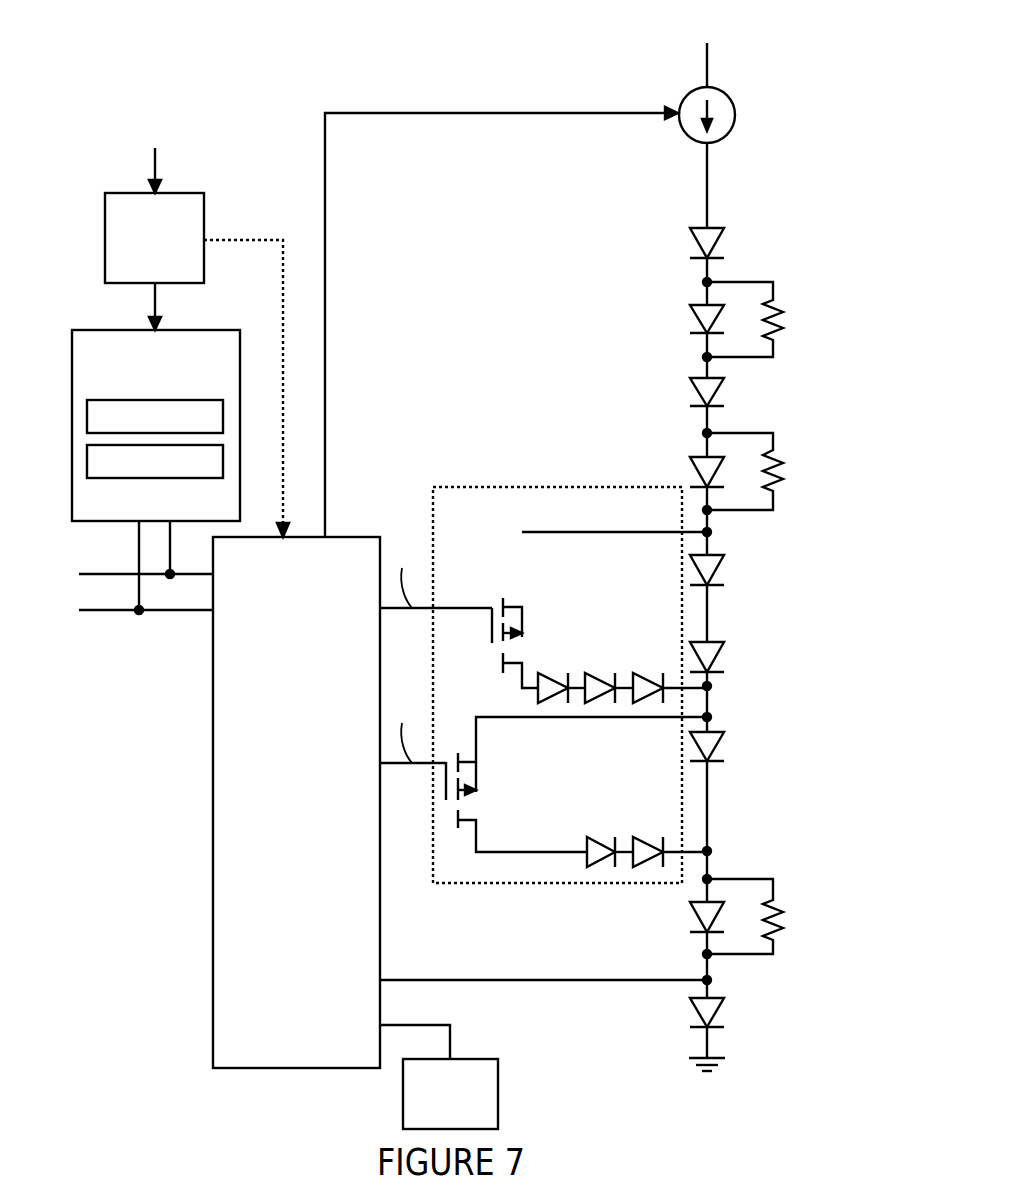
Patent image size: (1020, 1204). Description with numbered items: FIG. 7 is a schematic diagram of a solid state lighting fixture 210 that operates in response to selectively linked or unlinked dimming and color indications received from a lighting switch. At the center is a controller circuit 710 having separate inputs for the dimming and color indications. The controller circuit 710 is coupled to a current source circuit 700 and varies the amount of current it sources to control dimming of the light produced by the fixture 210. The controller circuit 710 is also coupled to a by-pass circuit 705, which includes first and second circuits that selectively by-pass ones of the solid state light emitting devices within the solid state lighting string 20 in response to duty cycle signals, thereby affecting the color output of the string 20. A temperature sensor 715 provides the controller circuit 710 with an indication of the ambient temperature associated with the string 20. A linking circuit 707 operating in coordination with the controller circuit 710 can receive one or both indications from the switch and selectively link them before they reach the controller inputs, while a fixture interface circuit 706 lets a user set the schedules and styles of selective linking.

The solid state lighting string 20 is at (806, 567).
The solid state lighting fixture 210 is at (382, 82).
The current source circuit 700 is at (754, 120).
The by-pass circuit 705 is at (478, 547).
The fixture interface circuit 706 is at (172, 262).
The linking circuit 707 is at (172, 387).
The controller circuit 710 is at (314, 844).
The temperature sensor 715 is at (473, 1059).